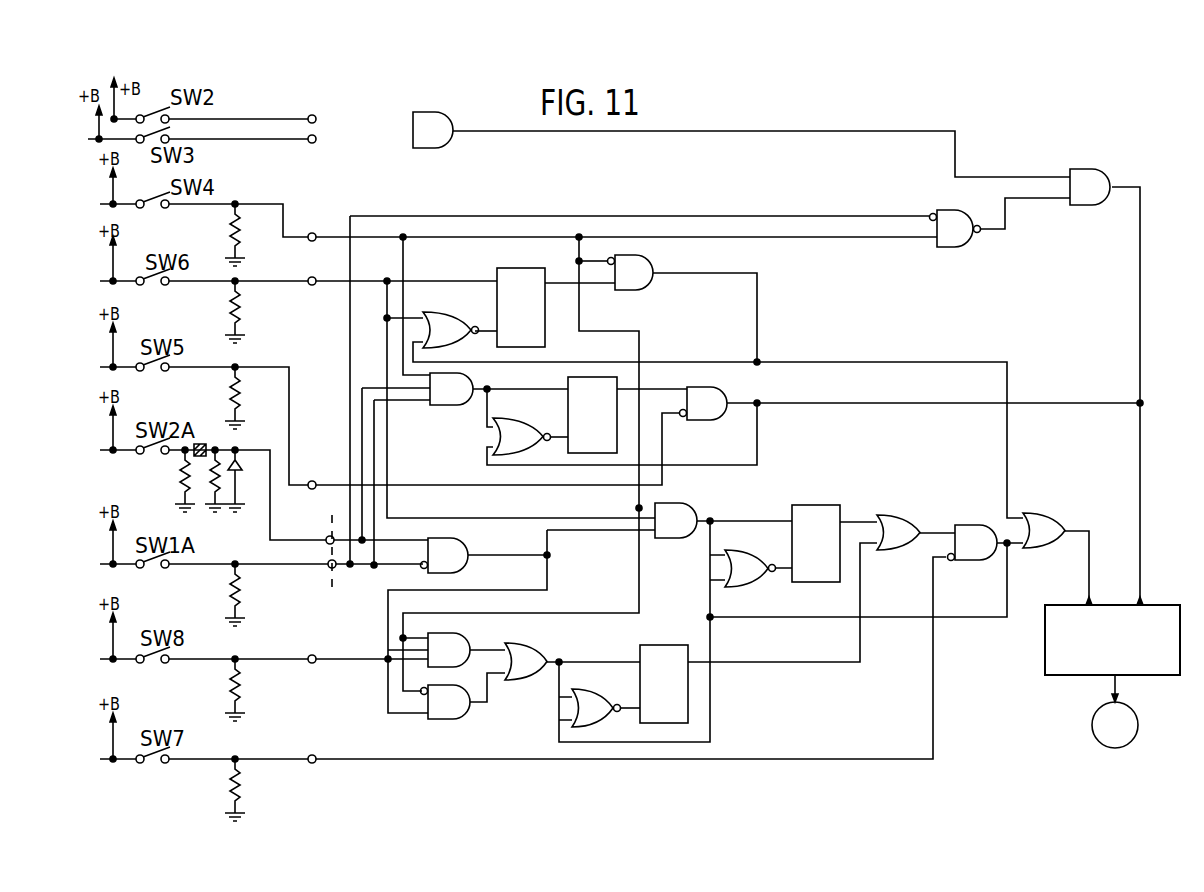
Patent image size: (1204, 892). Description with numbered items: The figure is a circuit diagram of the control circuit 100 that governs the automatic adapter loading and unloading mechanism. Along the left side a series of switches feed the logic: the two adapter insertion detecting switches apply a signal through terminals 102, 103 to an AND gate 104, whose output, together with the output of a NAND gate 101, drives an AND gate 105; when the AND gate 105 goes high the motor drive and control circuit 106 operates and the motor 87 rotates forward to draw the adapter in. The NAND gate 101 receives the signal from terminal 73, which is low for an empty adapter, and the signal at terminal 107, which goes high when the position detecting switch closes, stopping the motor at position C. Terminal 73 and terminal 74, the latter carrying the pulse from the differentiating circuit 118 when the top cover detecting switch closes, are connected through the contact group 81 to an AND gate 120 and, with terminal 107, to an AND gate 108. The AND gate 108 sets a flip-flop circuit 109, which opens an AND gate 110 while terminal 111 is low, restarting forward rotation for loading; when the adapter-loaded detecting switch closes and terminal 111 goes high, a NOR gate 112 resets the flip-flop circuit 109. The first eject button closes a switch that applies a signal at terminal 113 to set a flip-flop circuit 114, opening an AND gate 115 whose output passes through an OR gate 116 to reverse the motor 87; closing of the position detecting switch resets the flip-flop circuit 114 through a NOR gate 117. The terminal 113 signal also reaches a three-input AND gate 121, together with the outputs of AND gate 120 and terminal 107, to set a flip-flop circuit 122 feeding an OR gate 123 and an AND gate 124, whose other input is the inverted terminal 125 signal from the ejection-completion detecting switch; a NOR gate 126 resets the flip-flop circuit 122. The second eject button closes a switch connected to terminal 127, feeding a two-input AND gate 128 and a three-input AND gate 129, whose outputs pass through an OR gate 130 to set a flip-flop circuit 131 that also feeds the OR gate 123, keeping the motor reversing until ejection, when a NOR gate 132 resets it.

The control circuit 100 is at (978, 119).
The NAND gate 101 is at (955, 248).
The terminal 102 is at (312, 115).
The terminal 103 is at (315, 143).
The AND gate 104 is at (444, 113).
The AND gate 105 is at (1087, 169).
The motor drive and control circuit 106 is at (1062, 605).
The terminal 107 is at (313, 233).
The AND gate 108 is at (449, 405).
The flip-flop circuit 109 is at (600, 361).
The AND gate 110 is at (709, 420).
The terminal 111 is at (313, 480).
The NOR gate 112 is at (535, 417).
The terminal 113 is at (312, 286).
The flip-flop circuit 114 is at (496, 272).
The AND gate 115 is at (648, 282).
The OR gate 116 is at (1060, 505).
The NOR gate 117 is at (470, 309).
The differentiating circuit 118 is at (178, 473).
The AND gate 120 is at (467, 547).
The 3-input AND gate 121 is at (672, 538).
The flip-flop circuit 122 is at (800, 498).
The OR gate 123 is at (899, 515).
The AND gate 124 is at (972, 525).
The terminal 125 is at (313, 764).
The NOR gate 126 is at (760, 584).
The terminal 127 is at (313, 664).
The 2-input AND gate 128 is at (462, 719).
The 3-input AND gate 129 is at (467, 640).
The OR gate 130 is at (524, 679).
The flip-flop circuit 131 is at (640, 647).
The NOR gate 132 is at (610, 685).
The terminal 73 is at (328, 568).
The terminal 74 is at (327, 536).
The contact group 81 is at (335, 546).
The motor 87 is at (1092, 731).